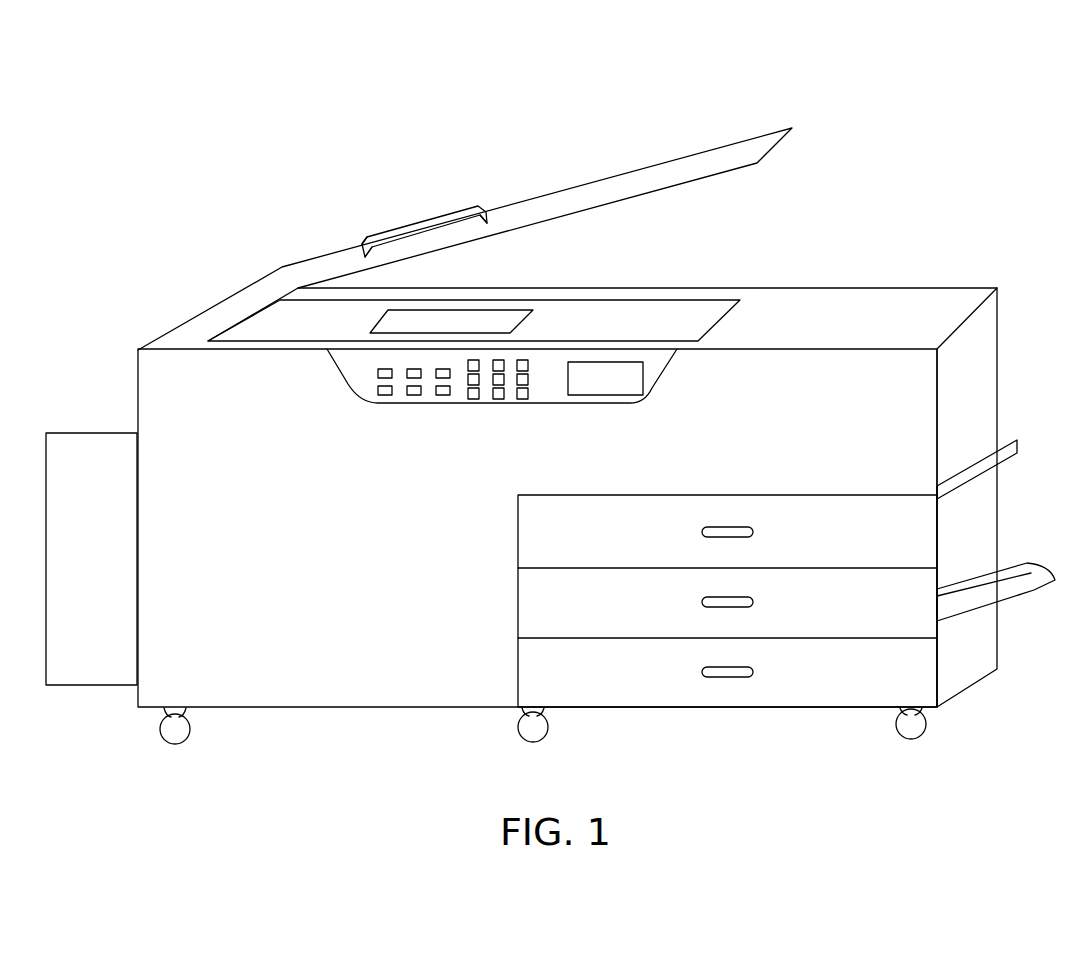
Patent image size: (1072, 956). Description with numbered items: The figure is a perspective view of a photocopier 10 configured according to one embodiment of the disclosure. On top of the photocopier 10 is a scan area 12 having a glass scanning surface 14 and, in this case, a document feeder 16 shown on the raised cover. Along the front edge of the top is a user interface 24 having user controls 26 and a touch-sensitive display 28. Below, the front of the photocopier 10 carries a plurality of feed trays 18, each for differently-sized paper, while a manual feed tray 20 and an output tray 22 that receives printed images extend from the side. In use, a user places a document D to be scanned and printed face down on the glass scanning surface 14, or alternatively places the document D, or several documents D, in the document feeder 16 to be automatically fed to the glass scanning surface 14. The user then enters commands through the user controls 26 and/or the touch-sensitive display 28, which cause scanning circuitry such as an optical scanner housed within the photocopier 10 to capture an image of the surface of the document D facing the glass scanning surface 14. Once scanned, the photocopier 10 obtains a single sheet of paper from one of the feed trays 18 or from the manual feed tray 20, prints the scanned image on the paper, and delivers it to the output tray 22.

The photocopier 10 is at (992, 122).
The scan area 12 is at (804, 195).
The glass scanning surface 14 is at (618, 308).
The document feeder 16 is at (433, 225).
The feed trays 18 is at (527, 531).
The manual feed tray 20 is at (1017, 440).
The output tray 22 is at (1051, 580).
The user interface 24 is at (342, 389).
The user controls 26 is at (392, 404).
The touch-sensitive display 28 is at (644, 381).
The document D is at (477, 320).